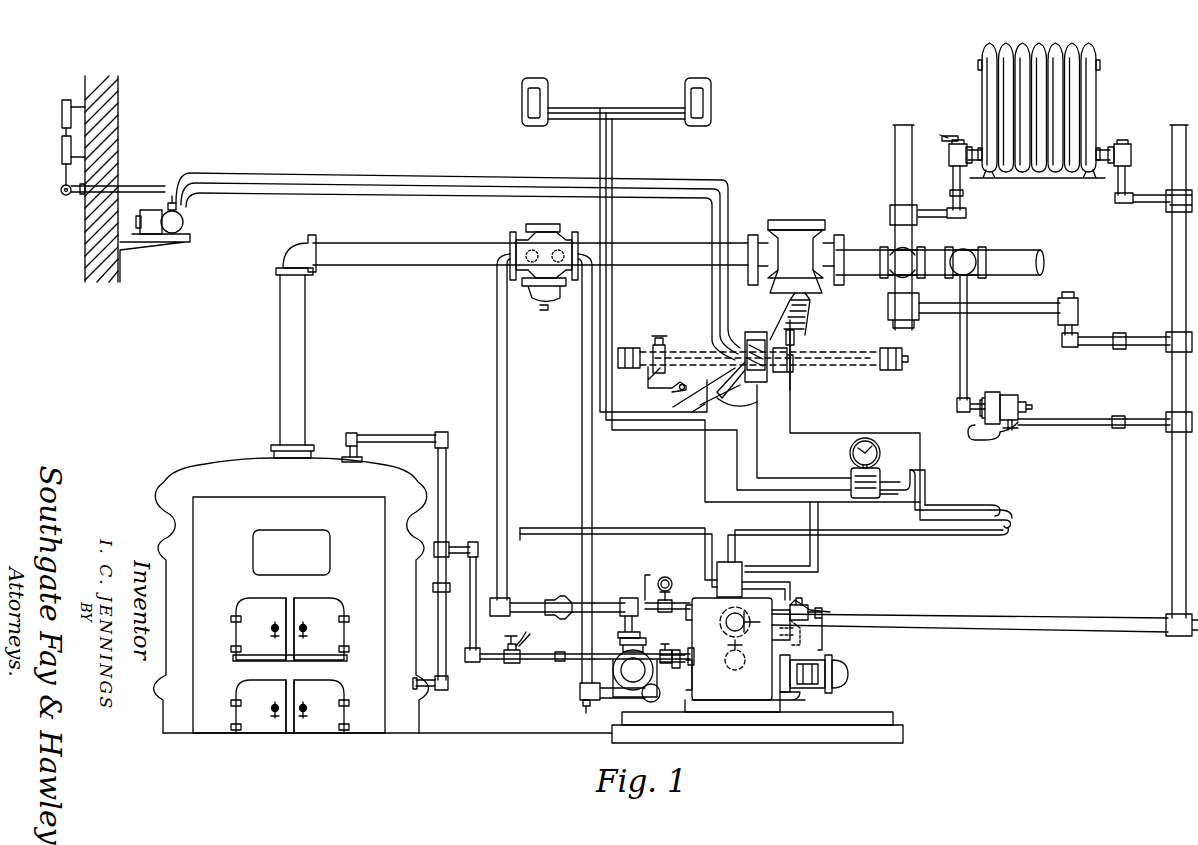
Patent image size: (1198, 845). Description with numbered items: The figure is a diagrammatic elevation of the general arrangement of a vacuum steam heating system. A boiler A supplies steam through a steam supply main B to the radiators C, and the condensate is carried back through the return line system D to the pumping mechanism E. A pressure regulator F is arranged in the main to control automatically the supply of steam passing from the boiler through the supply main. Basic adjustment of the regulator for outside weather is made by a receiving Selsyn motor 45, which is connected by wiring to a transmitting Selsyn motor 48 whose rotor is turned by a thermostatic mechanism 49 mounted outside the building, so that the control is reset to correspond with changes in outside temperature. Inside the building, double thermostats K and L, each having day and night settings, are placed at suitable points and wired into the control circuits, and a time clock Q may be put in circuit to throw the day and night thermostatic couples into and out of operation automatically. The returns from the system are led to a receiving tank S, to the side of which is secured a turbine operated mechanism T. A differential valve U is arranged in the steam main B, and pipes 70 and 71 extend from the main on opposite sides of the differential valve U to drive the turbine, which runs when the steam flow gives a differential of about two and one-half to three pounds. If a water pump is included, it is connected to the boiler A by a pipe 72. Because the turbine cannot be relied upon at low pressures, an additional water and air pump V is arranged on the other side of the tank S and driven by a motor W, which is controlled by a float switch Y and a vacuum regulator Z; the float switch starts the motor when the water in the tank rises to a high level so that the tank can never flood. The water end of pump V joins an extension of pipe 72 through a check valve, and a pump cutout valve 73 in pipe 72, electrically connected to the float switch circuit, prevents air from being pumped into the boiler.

The boiler A is at (240, 462).
The steam supply main B is at (403, 266).
The radiators C is at (1097, 118).
The return line system D is at (1172, 268).
The pumping mechanism E is at (757, 659).
The pressure regulator F is at (823, 290).
The double thermostat K is at (512, 103).
The double thermostat L is at (712, 103).
The time clock Q is at (872, 440).
The receiving tank S is at (700, 598).
The turbine operated mechanism T is at (645, 656).
The differential valve U is at (522, 238).
The water and air pump V is at (808, 688).
The motor W is at (835, 664).
The float switch Y is at (790, 612).
The vacuum regulator Z is at (1010, 392).
The receiving Selsyn motor 45 is at (751, 336).
The transmitting Selsyn motor 48 is at (170, 203).
The thermostatic mechanism 49 is at (63, 168).
The pipe 70 is at (508, 414).
The pipe 71 is at (582, 373).
The pipe 72 is at (486, 662).
The pump cutout valve 73 is at (514, 663).